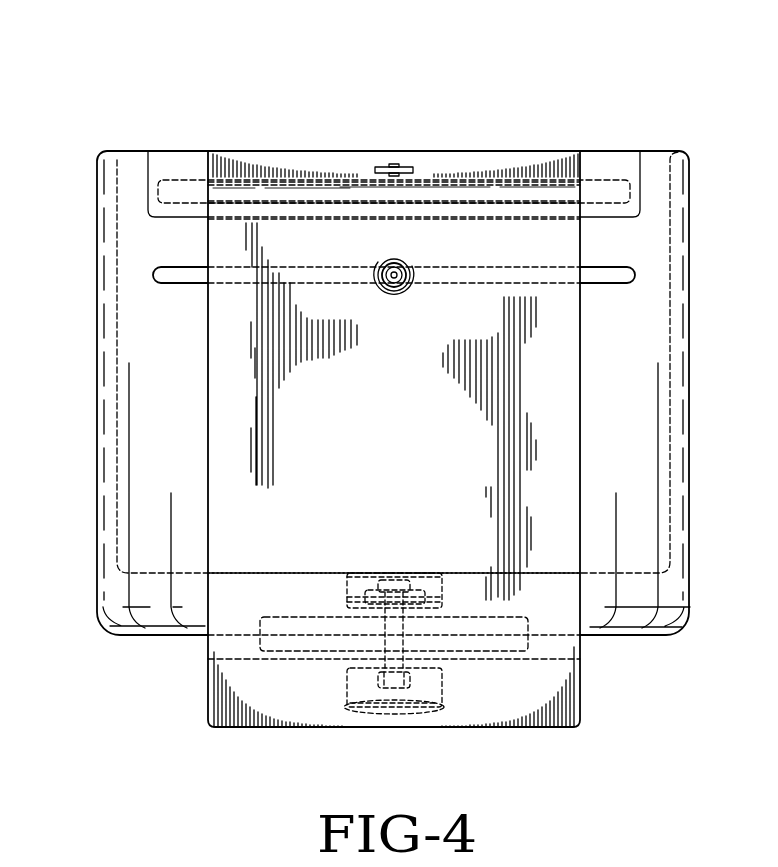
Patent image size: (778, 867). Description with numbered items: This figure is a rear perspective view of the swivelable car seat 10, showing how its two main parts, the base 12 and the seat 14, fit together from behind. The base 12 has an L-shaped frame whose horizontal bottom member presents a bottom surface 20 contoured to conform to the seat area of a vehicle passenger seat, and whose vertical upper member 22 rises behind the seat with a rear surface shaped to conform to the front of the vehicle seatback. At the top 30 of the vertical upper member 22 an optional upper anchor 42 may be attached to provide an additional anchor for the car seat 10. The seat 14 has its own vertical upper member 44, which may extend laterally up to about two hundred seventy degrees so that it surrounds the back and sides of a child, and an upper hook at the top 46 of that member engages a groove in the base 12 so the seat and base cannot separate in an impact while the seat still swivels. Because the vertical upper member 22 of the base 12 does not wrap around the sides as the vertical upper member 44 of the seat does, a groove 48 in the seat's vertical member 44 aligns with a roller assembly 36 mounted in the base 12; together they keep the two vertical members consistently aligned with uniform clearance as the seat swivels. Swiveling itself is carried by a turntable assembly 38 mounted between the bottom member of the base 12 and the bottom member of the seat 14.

The swivelable car seat 10 is at (714, 116).
The base 12 is at (208, 338).
The seat 14 is at (103, 378).
The bottom surface 20 is at (535, 728).
The vertical upper member 22 is at (540, 372).
The top 30 is at (272, 170).
The roller assembly 36 is at (396, 282).
The turntable assembly 38 is at (318, 656).
The upper anchor 42 is at (378, 168).
The vertical upper member 44 is at (168, 470).
The top 46 is at (127, 166).
The groove 48 is at (612, 277).